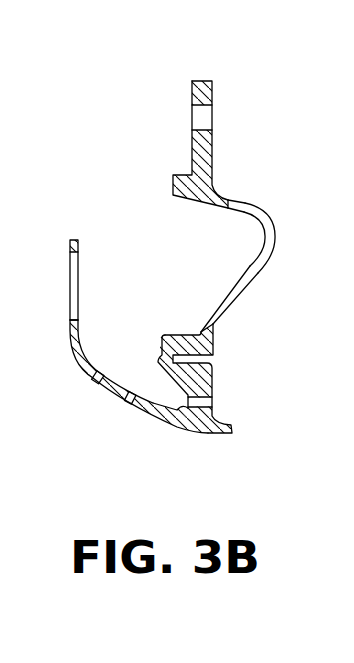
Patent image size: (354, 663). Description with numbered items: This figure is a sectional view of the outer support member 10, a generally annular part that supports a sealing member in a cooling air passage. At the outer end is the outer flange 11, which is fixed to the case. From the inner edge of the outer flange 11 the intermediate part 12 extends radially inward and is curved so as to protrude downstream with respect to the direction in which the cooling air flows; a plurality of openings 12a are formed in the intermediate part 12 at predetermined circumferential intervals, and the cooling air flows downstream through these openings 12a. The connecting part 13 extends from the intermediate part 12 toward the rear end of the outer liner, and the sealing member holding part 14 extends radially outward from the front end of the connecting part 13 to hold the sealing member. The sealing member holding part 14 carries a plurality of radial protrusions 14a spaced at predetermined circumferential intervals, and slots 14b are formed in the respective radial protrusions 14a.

The outer support member 10 is at (205, 437).
The outer flange 11 is at (183, 90).
The intermediate part 12 is at (271, 240).
The openings 12a is at (278, 242).
The connecting part 13 is at (160, 418).
The sealing member holding part 14 is at (117, 324).
The radial protrusions 14a is at (80, 240).
The slots 14b is at (80, 287).